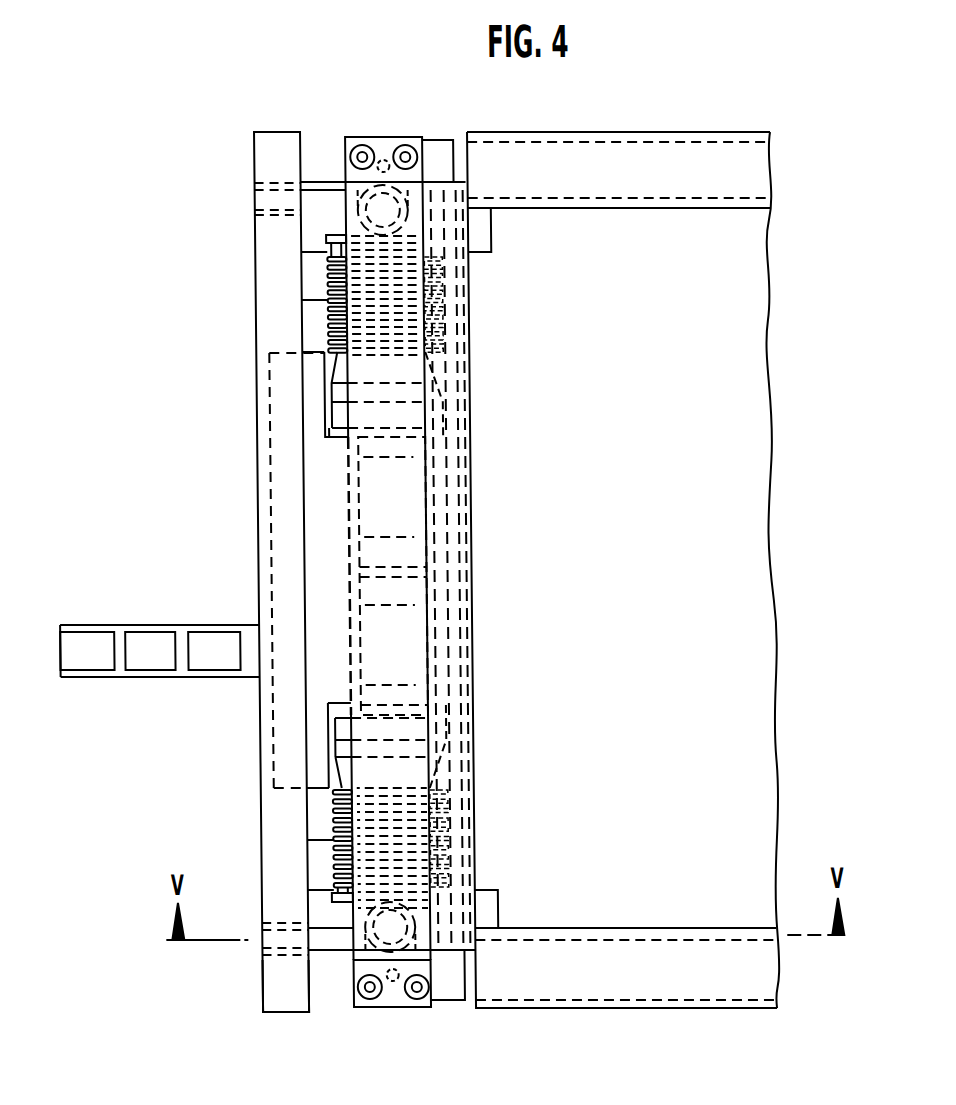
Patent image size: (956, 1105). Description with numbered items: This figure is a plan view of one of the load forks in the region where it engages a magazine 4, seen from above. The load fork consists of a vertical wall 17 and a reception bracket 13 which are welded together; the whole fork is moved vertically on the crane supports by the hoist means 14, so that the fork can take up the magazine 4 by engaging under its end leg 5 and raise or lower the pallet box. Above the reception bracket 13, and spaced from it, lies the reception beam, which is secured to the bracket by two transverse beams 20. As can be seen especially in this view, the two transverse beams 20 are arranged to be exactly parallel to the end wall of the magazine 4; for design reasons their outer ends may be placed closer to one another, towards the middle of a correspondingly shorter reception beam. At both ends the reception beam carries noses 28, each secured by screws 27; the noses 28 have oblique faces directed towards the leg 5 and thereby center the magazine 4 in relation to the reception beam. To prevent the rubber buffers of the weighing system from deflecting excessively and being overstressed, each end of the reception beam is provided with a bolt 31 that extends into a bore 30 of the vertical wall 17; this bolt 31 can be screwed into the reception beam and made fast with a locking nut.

The magazine 4 is at (634, 243).
The end leg 5 is at (410, 500).
The reception bracket 13 is at (318, 500).
The hoist means 14 is at (148, 640).
The vertical wall 17 is at (283, 993).
The transverse beam 20 is at (326, 297).
The screw 27 is at (405, 142).
The nose 28 is at (385, 137).
The bore 30 is at (284, 955).
The bolt 31 is at (318, 198).